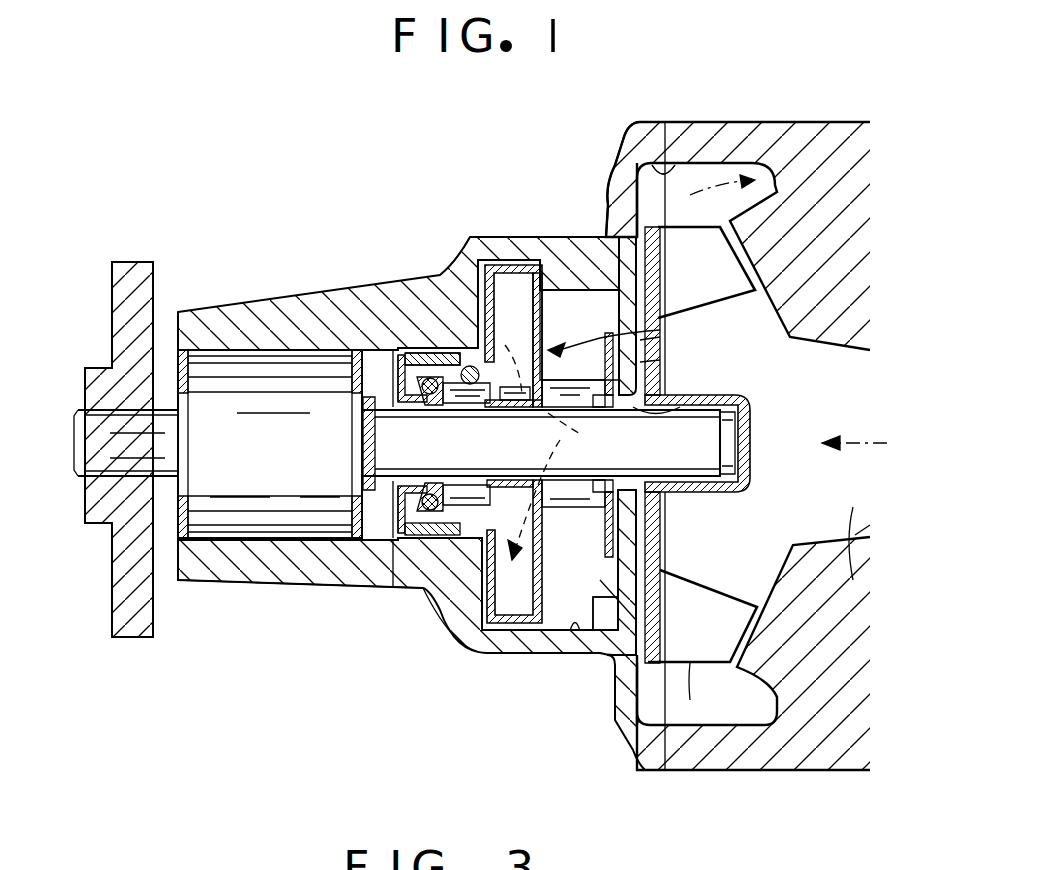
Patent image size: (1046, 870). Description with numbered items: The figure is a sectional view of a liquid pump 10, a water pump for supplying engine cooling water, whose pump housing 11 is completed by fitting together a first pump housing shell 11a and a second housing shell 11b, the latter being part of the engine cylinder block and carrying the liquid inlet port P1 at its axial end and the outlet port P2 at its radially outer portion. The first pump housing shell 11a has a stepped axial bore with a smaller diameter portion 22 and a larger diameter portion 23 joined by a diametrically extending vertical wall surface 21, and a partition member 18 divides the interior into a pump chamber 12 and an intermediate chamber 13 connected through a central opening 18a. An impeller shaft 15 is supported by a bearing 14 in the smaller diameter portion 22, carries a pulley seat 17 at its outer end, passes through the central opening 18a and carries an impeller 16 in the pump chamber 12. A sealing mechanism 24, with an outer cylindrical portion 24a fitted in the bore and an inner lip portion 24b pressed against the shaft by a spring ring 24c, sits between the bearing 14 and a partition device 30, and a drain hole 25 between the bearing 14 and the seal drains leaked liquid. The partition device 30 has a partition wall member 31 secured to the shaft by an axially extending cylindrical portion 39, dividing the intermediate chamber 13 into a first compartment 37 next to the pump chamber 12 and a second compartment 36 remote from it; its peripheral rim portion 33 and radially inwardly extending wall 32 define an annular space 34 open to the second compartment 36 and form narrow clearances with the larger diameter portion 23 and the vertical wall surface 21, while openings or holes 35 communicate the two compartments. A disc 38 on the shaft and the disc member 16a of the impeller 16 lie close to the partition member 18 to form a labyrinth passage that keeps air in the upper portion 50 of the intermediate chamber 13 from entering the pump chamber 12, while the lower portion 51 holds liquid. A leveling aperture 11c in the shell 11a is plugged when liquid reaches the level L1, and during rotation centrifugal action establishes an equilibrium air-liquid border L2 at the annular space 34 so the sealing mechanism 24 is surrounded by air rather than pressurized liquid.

The liquid pump 10 is at (238, 298).
The pump housing 11 is at (292, 320).
The first pump housing shell 11a is at (242, 567).
The second housing shell 11b is at (752, 742).
The leveling aperture 11c is at (468, 386).
The pump chamber 12 is at (680, 160).
The intermediate chamber 13 is at (445, 335).
The bearing 14 is at (270, 444).
The impeller shaft 15 is at (404, 443).
The impeller 16 is at (728, 272).
The disc member 16a is at (616, 200).
The pulley seat 17 is at (128, 275).
The partition member 18 is at (662, 565).
The central opening 18a is at (712, 395).
The vertical wall surface 21 is at (508, 600).
The smaller diameter portion 22 is at (462, 345).
The larger diameter portion 23 is at (575, 632).
The sealing mechanism 24 is at (388, 503).
The outer cylindrical portion 24a is at (402, 350).
The inner lip portion 24b is at (402, 380).
The spring ring 24c is at (400, 540).
The drain hole 25 is at (395, 542).
The partition device 30 is at (640, 340).
The partition wall member 31 is at (625, 540).
The radially inwardly extending wall 32 is at (488, 268).
The peripheral rim portion 33 is at (536, 268).
The annular space 34 is at (560, 530).
The openings or holes 35 is at (548, 640).
The second compartment 36 is at (467, 522).
The first compartment 37 is at (618, 600).
The disc 38 is at (616, 510).
The axially extending cylindrical portion 39 is at (482, 582).
The upper portion 50 is at (567, 300).
The lower portion 51 is at (592, 606).
The level L1 is at (600, 365).
The border between air phase and liquid phase L2 is at (563, 330).
The liquid inlet port P1 is at (861, 563).
The outlet port P2 is at (778, 140).